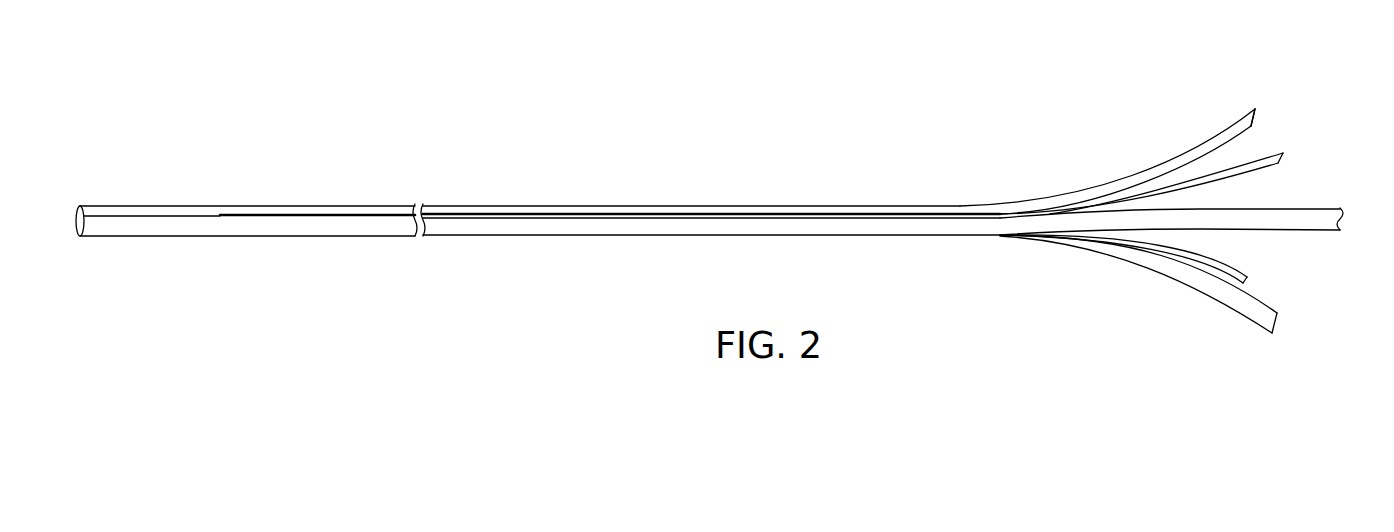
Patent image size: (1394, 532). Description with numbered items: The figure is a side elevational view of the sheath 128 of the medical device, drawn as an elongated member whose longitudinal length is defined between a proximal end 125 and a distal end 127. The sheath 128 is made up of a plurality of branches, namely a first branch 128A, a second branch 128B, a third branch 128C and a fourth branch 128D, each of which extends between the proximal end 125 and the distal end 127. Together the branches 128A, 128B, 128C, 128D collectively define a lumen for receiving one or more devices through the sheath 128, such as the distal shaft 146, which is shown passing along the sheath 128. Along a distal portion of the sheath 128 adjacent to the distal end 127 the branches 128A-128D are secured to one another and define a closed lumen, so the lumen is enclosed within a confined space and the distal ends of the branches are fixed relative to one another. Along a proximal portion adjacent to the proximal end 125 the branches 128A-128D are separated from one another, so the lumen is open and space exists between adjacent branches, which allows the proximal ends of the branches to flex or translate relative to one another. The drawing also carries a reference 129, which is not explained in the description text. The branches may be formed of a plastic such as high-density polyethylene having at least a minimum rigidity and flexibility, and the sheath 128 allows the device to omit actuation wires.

The proximal end 125 is at (1232, 103).
The distal end 127 is at (90, 200).
The sheath 128 is at (525, 178).
The first branch 128A is at (1123, 180).
The second branch 128B is at (223, 223).
The third branch 128C is at (258, 205).
The fourth branch 128D is at (1247, 282).
The distal portion 129 is at (900, 175).
The distal shaft 146 is at (1323, 210).